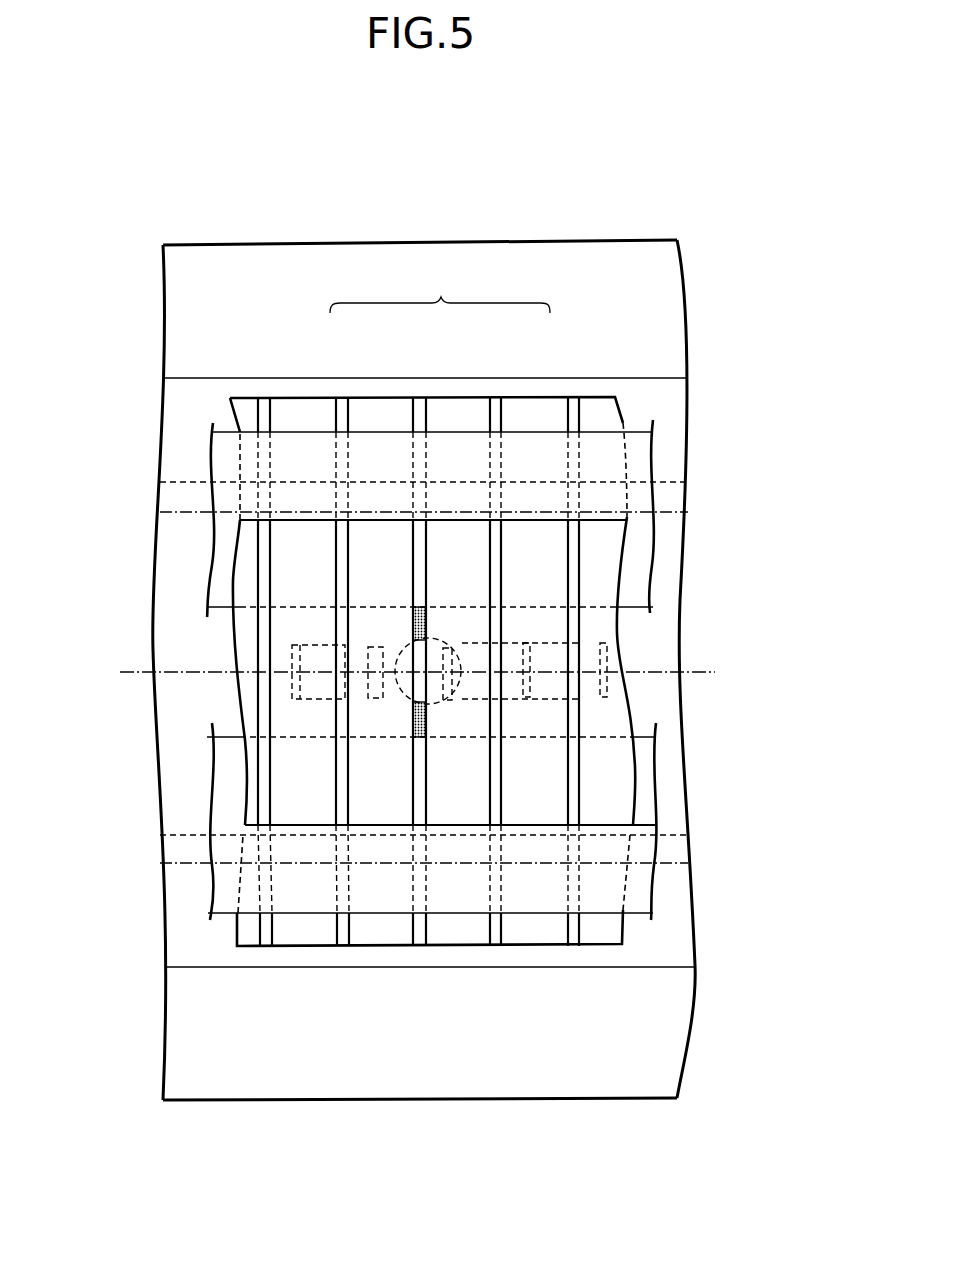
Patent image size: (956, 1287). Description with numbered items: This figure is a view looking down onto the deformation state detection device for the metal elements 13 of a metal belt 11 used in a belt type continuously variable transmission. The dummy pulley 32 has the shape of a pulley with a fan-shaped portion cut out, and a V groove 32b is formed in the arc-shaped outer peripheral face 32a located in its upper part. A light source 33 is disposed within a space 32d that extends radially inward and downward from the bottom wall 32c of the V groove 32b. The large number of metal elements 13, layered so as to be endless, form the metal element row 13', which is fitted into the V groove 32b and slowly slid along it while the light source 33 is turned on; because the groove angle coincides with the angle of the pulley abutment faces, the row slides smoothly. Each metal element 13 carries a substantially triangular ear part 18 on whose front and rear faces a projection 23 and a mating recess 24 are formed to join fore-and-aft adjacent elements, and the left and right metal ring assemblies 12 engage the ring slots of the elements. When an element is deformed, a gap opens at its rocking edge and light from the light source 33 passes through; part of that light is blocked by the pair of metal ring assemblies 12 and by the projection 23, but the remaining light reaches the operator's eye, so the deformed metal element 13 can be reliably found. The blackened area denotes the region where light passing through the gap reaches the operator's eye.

The metal belt 11 is at (601, 364).
The metal ring assembly 12 is at (608, 444).
The metal element 13 is at (427, 626).
The metal element row 13' is at (440, 294).
The ear part 18 is at (385, 527).
The projection 23 is at (312, 700).
The recess 24 is at (393, 637).
The dummy pulley 32 is at (700, 289).
The outer peripheral face 32a is at (300, 258).
The V groove 32b is at (200, 388).
The bottom wall 32c is at (173, 498).
The space 32d is at (178, 833).
The light source 33 is at (433, 638).